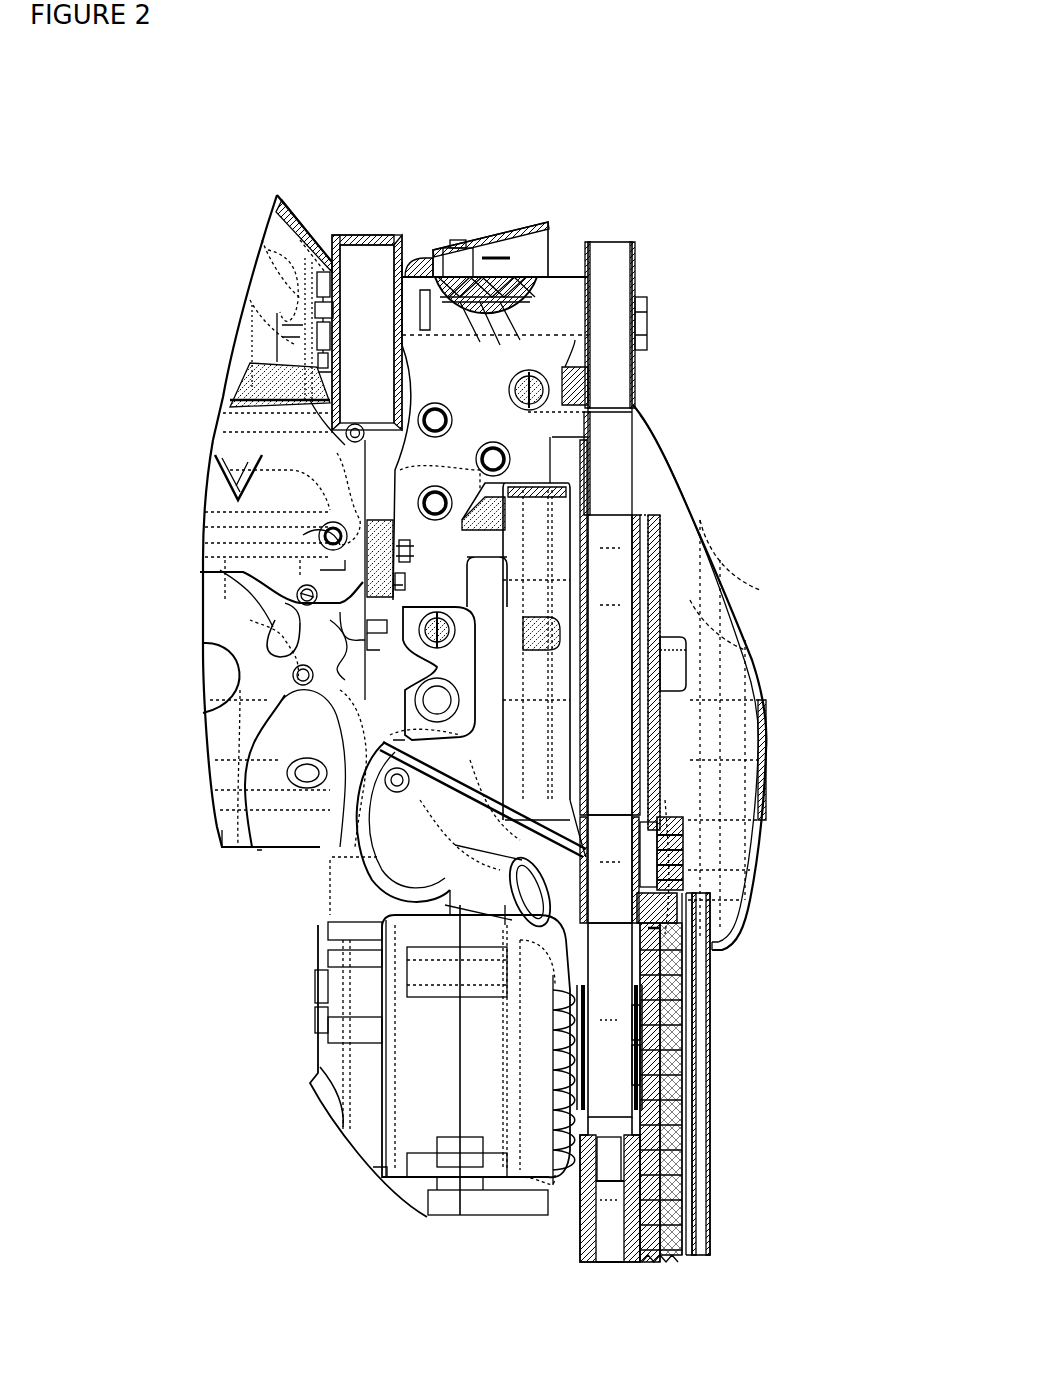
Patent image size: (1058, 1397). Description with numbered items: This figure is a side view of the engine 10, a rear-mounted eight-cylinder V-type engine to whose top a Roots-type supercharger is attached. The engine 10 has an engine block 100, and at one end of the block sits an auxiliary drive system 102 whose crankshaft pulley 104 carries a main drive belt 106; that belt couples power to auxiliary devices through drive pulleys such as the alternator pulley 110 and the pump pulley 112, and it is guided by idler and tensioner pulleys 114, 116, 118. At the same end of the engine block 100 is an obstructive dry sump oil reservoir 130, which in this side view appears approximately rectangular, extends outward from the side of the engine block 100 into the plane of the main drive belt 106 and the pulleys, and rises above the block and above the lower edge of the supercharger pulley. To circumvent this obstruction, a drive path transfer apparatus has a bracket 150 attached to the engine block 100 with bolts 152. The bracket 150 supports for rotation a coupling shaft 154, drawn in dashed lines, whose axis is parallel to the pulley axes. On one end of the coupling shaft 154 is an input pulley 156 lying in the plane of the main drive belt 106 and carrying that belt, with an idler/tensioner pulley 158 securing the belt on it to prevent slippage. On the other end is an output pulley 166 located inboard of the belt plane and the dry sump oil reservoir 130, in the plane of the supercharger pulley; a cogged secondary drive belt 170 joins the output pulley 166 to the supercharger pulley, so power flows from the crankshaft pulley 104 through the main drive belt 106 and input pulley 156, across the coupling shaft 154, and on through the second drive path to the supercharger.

The engine 10 is at (650, 824).
The engine block 100 is at (247, 400).
The auxiliary drive system 102 is at (388, 987).
The crankshaft pulley 104 is at (712, 1033).
The main drive belt 106 is at (604, 1264).
The alternator pulley 110 is at (648, 1062).
The pump pulley 112 is at (651, 655).
The idler and tensioner pulley 114 is at (363, 713).
The idler and tensioner pulley 116 is at (637, 878).
The idler and tensioner pulley 118 is at (658, 929).
The dry sump oil reservoir 130 is at (771, 722).
The bracket 150 is at (417, 263).
The bolts 152 is at (392, 556).
The coupling shaft 154 is at (495, 300).
The input pulley 156 is at (633, 268).
The idler/tensioner pulley 158 is at (648, 467).
The output pulley 166 is at (327, 252).
The secondary drive belt 170 is at (355, 437).